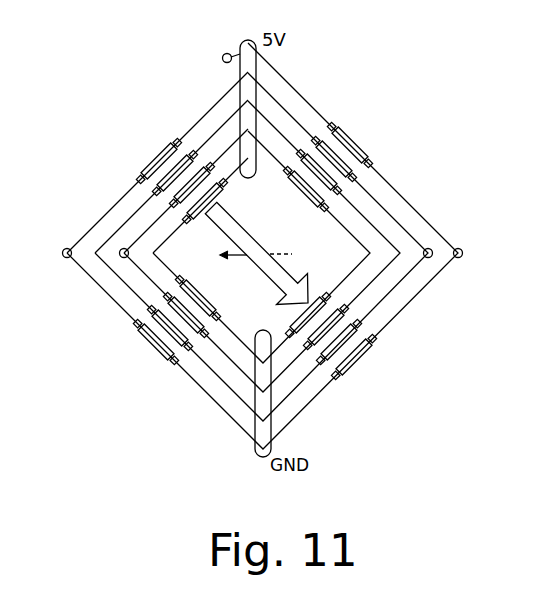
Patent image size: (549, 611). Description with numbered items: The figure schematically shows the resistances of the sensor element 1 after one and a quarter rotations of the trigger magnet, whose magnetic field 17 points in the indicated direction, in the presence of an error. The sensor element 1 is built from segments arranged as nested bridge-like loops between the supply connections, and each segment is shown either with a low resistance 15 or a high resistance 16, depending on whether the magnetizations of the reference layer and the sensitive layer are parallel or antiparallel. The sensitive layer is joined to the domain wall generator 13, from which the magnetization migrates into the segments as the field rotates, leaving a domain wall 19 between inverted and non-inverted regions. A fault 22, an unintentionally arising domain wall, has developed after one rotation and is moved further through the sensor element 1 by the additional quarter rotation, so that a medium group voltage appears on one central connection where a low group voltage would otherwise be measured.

The sensor element 1 is at (140, 398).
The domain wall generator 13 is at (222, 59).
The low resistance 15 is at (173, 205).
The high resistance 16 is at (172, 146).
The magnetic field 17 is at (290, 266).
The domain wall 19 is at (432, 249).
The fault 22 is at (121, 250).